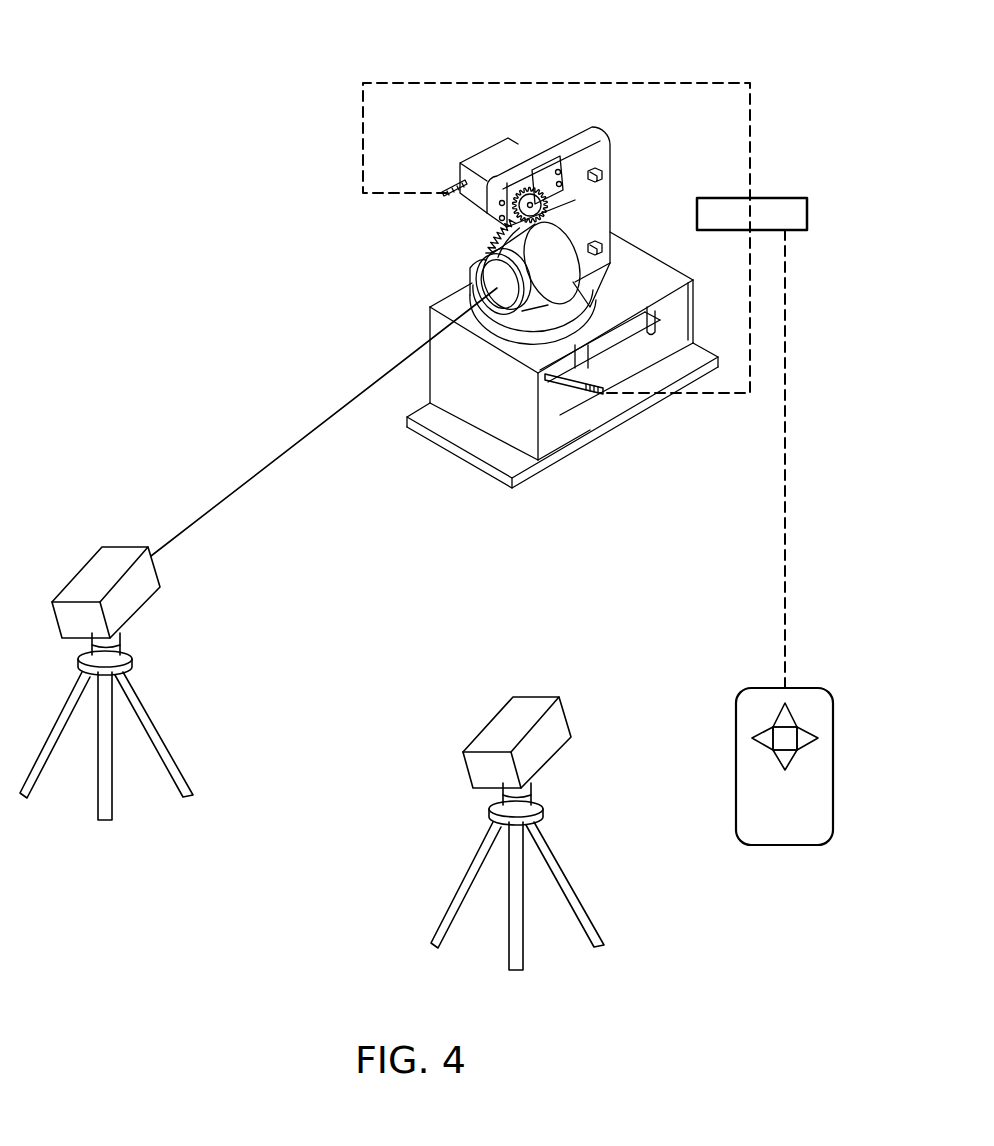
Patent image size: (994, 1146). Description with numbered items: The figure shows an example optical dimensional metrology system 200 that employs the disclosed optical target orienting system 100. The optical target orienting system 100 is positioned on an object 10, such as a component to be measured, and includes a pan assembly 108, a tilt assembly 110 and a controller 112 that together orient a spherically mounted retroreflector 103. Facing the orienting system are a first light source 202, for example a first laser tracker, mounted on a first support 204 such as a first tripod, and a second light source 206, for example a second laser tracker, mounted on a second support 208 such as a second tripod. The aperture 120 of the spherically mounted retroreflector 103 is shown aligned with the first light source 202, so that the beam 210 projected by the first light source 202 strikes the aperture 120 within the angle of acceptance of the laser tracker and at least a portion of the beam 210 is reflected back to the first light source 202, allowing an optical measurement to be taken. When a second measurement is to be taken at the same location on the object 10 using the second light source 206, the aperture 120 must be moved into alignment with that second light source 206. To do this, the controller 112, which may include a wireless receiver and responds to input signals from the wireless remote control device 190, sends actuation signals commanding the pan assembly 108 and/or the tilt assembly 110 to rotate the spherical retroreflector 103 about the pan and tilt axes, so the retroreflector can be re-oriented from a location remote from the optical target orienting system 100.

The object 10 is at (652, 270).
The optical target orienting system 100 is at (610, 178).
The spherical retroreflector 103 is at (553, 273).
The pan assembly 108 is at (571, 400).
The tilt assembly 110 is at (477, 147).
The controller 112 is at (787, 197).
The aperture 120 is at (482, 277).
The wireless remote control device 190 is at (784, 845).
The optical dimensional metrology system 200 is at (758, 92).
The first light source 202 is at (138, 590).
The first support 204 is at (152, 713).
The second light source 206 is at (549, 740).
The second support 208 is at (563, 863).
The beam 210 is at (260, 472).